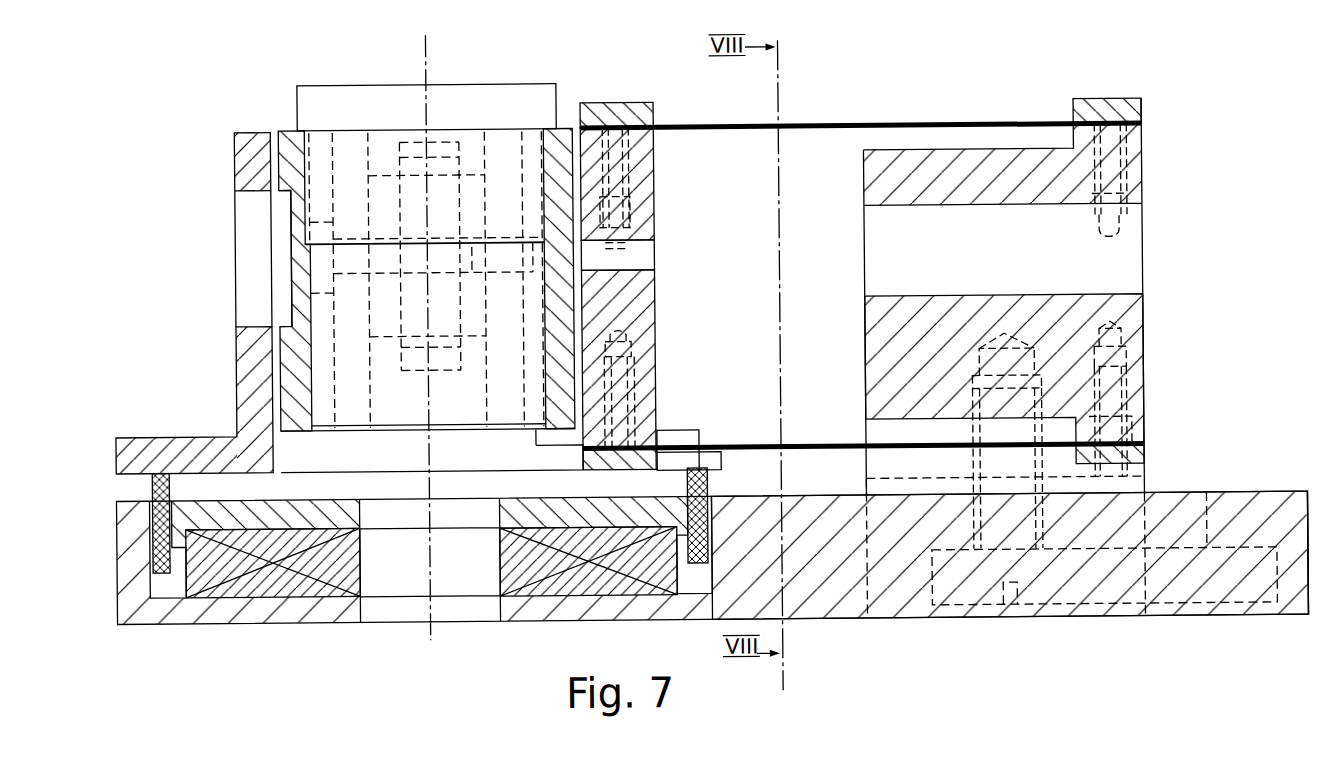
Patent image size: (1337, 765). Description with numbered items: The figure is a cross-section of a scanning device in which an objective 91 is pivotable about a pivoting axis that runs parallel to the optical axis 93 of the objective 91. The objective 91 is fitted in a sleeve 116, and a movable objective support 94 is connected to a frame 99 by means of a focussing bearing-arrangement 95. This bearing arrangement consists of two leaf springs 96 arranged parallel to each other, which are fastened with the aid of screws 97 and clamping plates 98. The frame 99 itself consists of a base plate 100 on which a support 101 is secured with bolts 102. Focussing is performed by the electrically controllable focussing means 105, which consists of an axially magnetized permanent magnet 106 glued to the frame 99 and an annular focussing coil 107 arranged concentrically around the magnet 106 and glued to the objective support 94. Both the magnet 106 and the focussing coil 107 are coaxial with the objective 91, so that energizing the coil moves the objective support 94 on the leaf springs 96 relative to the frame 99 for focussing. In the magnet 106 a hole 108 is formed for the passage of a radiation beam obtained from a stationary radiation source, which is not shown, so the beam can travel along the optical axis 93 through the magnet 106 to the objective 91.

The objective 91 is at (515, 112).
The optical axis 93 is at (422, 130).
The movable objective support 94 is at (256, 379).
The focussing bearing-arrangement 95 is at (889, 112).
The leaf springs 96 is at (704, 136).
The screws 97 is at (1116, 118).
The clamping plates 98 is at (1081, 118).
The frame 99 is at (1250, 496).
The base plate 100 is at (1293, 585).
The support 101 is at (1145, 308).
The bolts 102 is at (1034, 615).
The electrically controllable focussing means 105 is at (176, 634).
The axially magnetized permanent magnet 106 is at (281, 586).
The annular focussing coil 107 is at (172, 486).
The hole 108 is at (459, 608).
The sleeve 116 is at (283, 165).